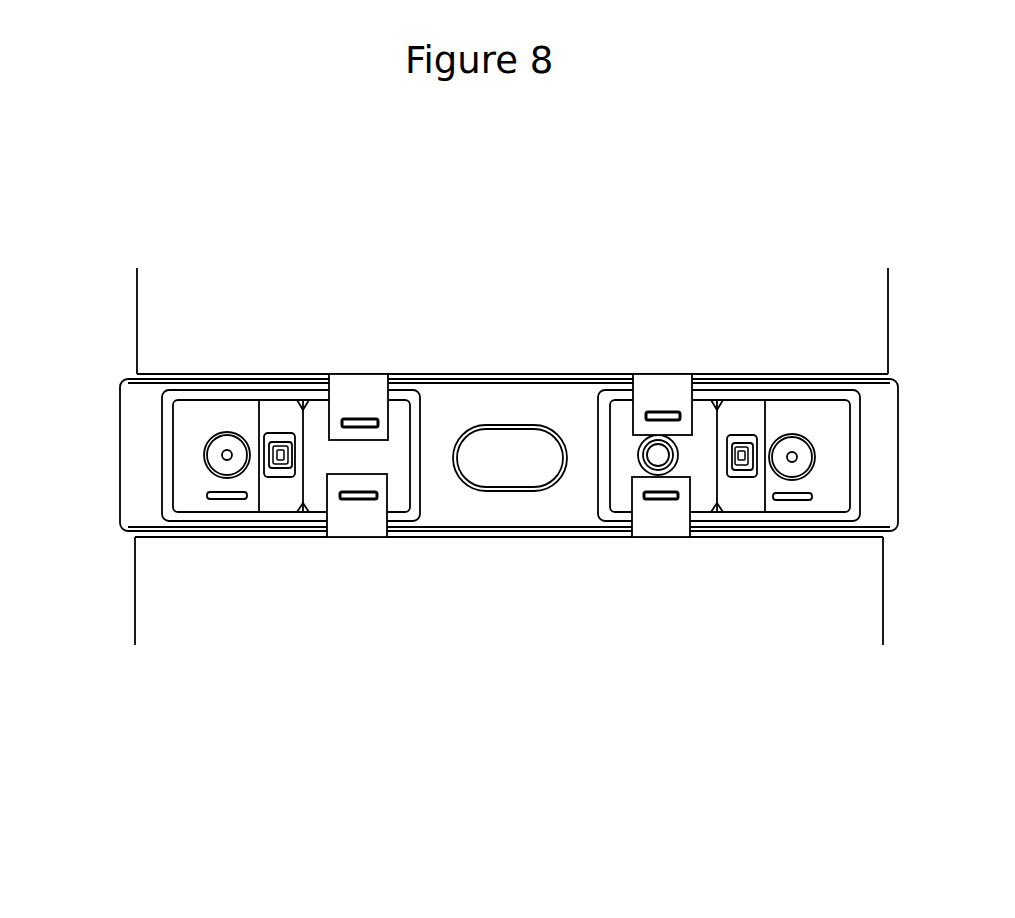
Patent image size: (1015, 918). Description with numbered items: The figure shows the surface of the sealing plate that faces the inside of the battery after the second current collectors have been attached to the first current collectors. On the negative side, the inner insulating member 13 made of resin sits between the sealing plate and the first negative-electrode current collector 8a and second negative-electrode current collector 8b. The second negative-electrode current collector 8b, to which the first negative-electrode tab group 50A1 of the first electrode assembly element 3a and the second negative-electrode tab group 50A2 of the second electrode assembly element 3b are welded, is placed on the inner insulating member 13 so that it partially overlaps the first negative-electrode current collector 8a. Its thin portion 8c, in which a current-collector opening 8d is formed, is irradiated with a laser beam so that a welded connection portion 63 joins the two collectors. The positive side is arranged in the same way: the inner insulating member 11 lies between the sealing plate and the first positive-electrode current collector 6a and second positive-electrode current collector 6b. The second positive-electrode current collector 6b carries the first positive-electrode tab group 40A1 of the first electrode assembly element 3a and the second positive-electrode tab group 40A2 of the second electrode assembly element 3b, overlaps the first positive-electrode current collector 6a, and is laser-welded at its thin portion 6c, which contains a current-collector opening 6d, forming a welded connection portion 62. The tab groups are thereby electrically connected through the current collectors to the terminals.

The first electrode assembly element 3a is at (857, 311).
The second electrode assembly element 3b is at (857, 612).
The inner insulating member 13 is at (172, 513).
The inner insulating member 11 is at (855, 492).
The first negative-electrode current collector 8a is at (213, 421).
The second negative-electrode current collector 8b is at (388, 452).
The thin portion 8c is at (284, 440).
The current-collector opening 8d is at (278, 478).
The welded connection portion 63 is at (283, 462).
The first positive-electrode current collector 6a is at (817, 430).
The second positive-electrode current collector 6b is at (622, 455).
The thin portion 6c is at (746, 438).
The current-collector opening 6d is at (733, 478).
The welded connection portion 62 is at (745, 478).
The first negative-electrode tab group 50A1 is at (356, 400).
The second negative-electrode tab group 50A2 is at (356, 520).
The first positive-electrode tab group 40A1 is at (658, 397).
The second positive-electrode tab group 40A2 is at (660, 517).